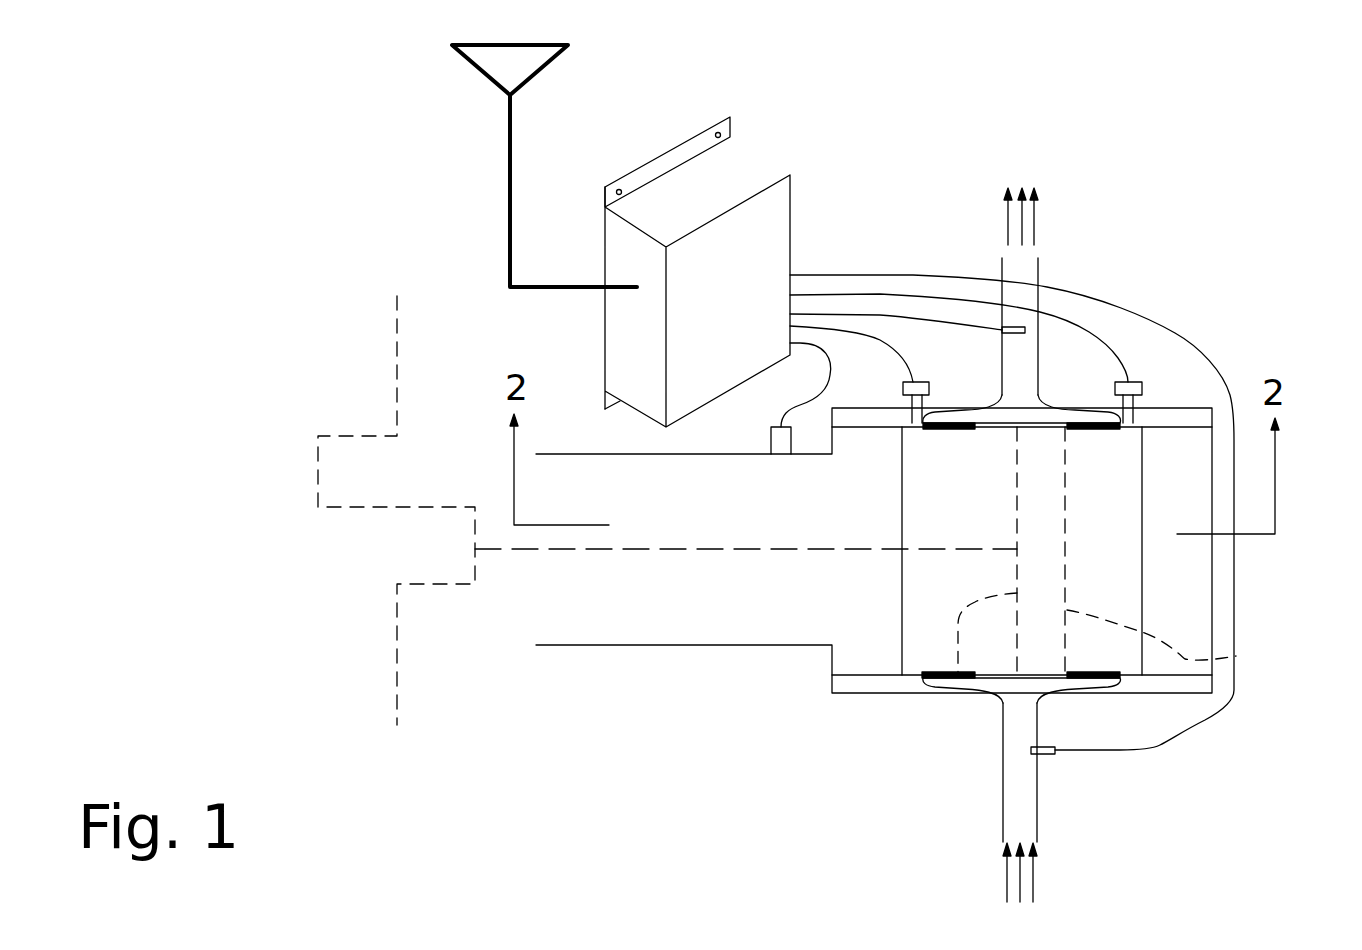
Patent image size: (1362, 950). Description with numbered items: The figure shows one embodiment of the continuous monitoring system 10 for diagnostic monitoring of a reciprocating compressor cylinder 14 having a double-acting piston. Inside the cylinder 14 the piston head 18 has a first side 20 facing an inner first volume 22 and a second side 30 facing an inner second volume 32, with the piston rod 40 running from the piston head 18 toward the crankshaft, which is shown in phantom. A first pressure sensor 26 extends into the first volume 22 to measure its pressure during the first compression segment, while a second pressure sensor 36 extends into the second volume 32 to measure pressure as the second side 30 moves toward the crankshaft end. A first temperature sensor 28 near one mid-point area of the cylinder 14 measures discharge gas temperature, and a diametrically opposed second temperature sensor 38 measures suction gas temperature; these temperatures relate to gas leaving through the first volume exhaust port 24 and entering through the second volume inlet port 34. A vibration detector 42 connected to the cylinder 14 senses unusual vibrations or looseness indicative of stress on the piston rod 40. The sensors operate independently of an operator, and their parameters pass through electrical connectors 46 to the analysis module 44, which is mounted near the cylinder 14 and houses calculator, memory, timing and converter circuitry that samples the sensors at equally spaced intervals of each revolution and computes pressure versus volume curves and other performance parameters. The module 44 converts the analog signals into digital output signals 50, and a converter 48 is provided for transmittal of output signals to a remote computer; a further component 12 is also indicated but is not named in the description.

The continuous monitoring system 10 is at (1201, 208).
The sensor lead wires 12 is at (815, 262).
The reciprocating compressor cylinder 14 is at (851, 695).
The piston head 18 is at (1033, 637).
The first side 20 is at (1236, 656).
The inner first volume 22 is at (1166, 630).
The first volume exhaust port 24 is at (1022, 218).
The first pressure sensor 26 is at (1170, 380).
The first temperature sensor 28 is at (1000, 325).
The second side 30 is at (958, 690).
The inner second volume 32 is at (865, 593).
The second volume inlet port 34 is at (1023, 880).
The second pressure sensor 36 is at (918, 377).
The second temperature sensor 38 is at (1078, 775).
The piston rod 40 is at (613, 549).
The vibration detector 42 is at (771, 437).
The analysis module 44 is at (741, 342).
The electrical connectors 46 is at (838, 313).
The converter 48 is at (707, 187).
The digital output signals 50 is at (503, 68).